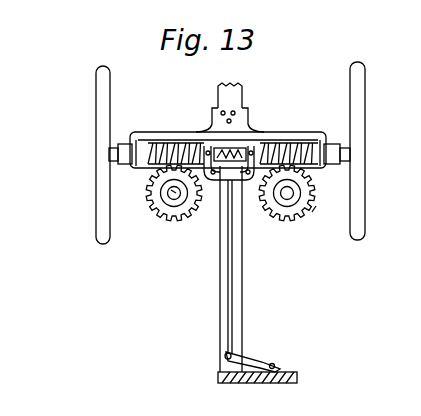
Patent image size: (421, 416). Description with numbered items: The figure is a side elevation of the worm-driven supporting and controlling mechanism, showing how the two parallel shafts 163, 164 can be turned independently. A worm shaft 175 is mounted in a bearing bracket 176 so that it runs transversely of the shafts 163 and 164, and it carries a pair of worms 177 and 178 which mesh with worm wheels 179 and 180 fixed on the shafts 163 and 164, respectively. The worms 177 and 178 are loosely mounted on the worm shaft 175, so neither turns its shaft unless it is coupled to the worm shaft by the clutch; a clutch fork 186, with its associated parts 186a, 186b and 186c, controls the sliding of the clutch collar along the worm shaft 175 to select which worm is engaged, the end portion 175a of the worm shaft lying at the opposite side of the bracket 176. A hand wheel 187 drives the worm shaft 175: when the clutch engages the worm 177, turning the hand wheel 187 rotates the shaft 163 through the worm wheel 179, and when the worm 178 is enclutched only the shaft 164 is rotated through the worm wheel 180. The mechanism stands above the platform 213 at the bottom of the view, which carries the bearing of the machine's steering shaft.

The shaft 163 is at (158, 204).
The shaft 164 is at (285, 199).
The worm shaft 175 is at (114, 153).
The right end cap 175a is at (352, 168).
The bearing bracket 176 is at (277, 131).
The worm 177 is at (148, 162).
The worm 178 is at (297, 142).
The worm wheel 179 is at (156, 210).
The worm wheel 180 is at (313, 214).
The clutch fork 186 is at (218, 197).
The bracket 186a is at (233, 150).
The arm 186b is at (231, 292).
The link 186c is at (254, 361).
The hand wheel 187 is at (103, 66).
The platform 213 is at (297, 378).